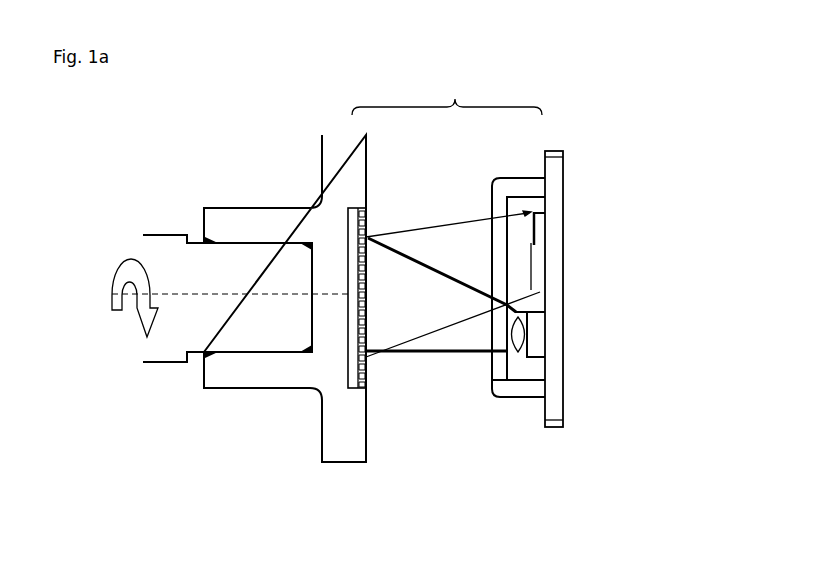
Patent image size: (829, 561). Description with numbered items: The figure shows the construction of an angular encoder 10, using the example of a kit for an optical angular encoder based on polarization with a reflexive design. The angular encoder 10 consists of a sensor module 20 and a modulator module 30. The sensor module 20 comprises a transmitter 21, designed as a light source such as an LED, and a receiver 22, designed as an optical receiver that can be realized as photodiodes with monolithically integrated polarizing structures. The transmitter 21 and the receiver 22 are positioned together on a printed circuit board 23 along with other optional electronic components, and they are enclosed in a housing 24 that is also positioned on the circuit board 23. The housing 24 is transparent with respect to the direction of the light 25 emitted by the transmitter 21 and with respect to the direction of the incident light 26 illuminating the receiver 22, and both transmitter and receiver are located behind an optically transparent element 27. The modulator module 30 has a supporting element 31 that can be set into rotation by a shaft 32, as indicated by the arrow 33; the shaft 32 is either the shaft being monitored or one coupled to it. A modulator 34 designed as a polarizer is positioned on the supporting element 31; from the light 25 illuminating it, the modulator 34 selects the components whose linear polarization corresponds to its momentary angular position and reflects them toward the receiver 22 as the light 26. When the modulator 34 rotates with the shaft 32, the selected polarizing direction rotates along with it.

The angular encoder 10 is at (447, 94).
The sensor module 20 is at (585, 173).
The transmitter 21 is at (535, 339).
The receiver 22 is at (540, 225).
The printed circuit board 23 is at (553, 258).
The housing 24 is at (512, 187).
The light 25 is at (442, 337).
The light 26 is at (452, 257).
The optically transparent element 27 is at (510, 287).
The modulator module 30 is at (243, 187).
The supporting element 31 is at (222, 378).
The shaft 32 is at (193, 295).
The arrow 33 is at (102, 285).
The modulator 34 is at (353, 358).